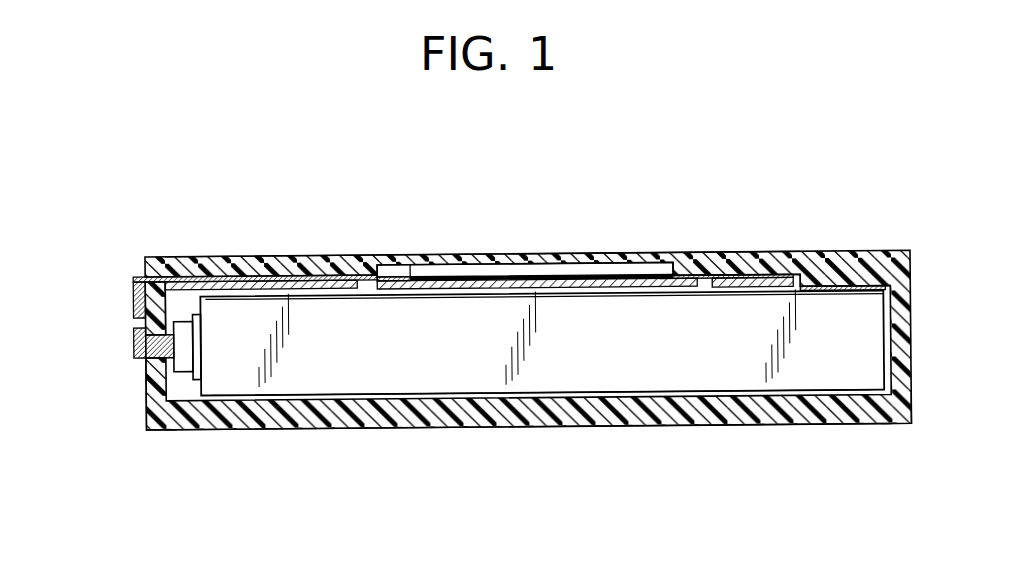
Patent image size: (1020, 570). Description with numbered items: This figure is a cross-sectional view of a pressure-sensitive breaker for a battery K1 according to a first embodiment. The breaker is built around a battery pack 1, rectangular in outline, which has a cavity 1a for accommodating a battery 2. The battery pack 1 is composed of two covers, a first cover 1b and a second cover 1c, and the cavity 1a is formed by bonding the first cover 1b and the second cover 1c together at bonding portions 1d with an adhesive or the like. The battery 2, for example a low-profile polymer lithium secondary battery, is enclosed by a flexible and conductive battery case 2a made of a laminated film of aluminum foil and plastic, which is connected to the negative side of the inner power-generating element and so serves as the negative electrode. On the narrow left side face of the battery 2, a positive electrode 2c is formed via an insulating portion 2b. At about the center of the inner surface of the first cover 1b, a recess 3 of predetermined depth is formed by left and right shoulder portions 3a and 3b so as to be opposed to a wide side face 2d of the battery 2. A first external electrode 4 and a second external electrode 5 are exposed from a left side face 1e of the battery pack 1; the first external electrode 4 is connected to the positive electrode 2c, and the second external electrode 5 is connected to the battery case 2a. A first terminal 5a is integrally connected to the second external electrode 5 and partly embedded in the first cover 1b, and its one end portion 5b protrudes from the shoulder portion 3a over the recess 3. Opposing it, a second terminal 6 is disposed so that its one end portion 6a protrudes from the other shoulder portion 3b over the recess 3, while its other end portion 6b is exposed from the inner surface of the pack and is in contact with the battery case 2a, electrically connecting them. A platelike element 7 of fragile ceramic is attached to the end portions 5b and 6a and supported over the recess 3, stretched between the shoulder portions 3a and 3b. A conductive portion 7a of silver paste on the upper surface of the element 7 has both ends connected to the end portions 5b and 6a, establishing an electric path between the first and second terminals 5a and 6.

The pressure-sensitive breaker for a battery K1 is at (140, 246).
The battery pack 1 is at (222, 254).
The cavity 1a is at (185, 306).
The first cover 1b is at (323, 254).
The second cover 1c is at (565, 427).
The bonding portions 1d is at (144, 417).
The left side face 1e is at (144, 370).
The battery 2 is at (338, 348).
The battery case 2a is at (470, 372).
The insulating portion 2b is at (197, 354).
The positive electrode 2c is at (185, 362).
The wide side face 2d is at (603, 294).
The recess 3 is at (540, 278).
The left shoulder portion 3a is at (387, 270).
The right shoulder portion 3b is at (672, 269).
The first external electrode 4 is at (132, 346).
The second external electrode 5 is at (121, 292).
The first terminal 5a is at (253, 280).
The one end portion of the first terminal 5b is at (413, 277).
The second terminal 6 is at (750, 261).
The one end portion of the second terminal 6a is at (647, 276).
The other end portion of the second terminal 6b is at (863, 287).
The platelike element 7 is at (475, 268).
The conductive portion 7a is at (497, 278).